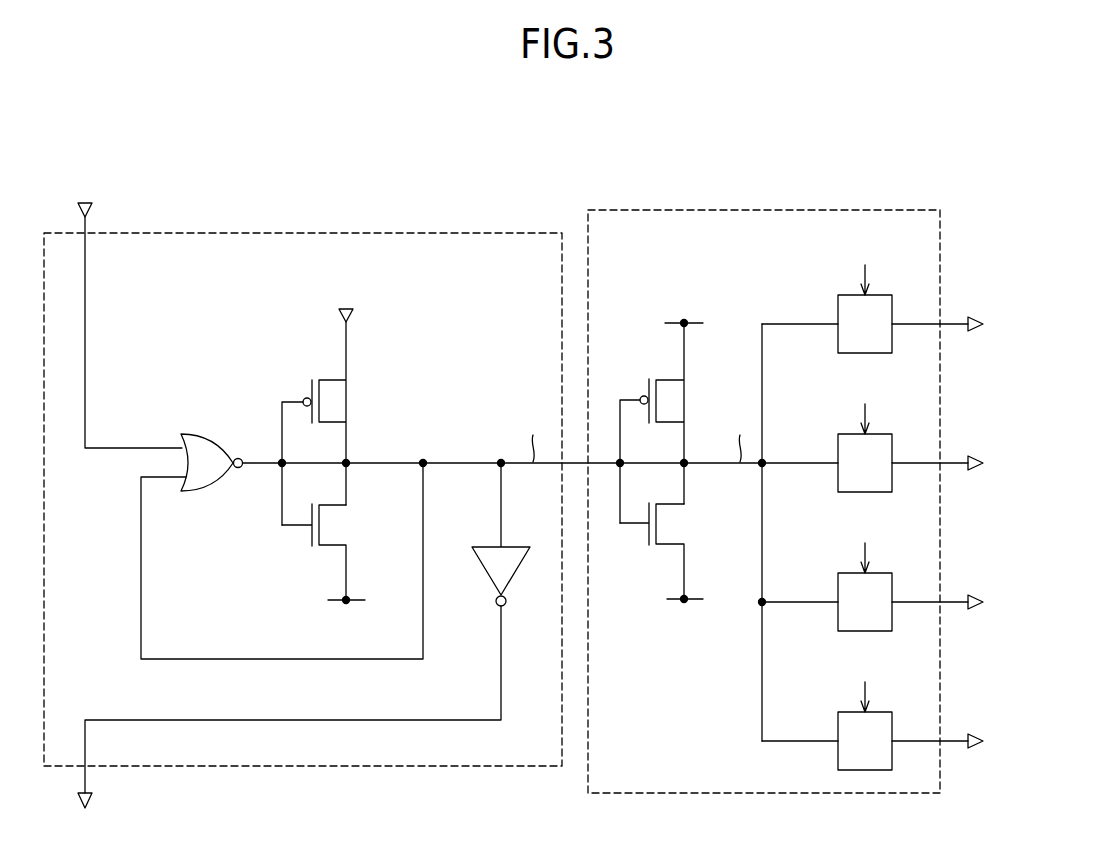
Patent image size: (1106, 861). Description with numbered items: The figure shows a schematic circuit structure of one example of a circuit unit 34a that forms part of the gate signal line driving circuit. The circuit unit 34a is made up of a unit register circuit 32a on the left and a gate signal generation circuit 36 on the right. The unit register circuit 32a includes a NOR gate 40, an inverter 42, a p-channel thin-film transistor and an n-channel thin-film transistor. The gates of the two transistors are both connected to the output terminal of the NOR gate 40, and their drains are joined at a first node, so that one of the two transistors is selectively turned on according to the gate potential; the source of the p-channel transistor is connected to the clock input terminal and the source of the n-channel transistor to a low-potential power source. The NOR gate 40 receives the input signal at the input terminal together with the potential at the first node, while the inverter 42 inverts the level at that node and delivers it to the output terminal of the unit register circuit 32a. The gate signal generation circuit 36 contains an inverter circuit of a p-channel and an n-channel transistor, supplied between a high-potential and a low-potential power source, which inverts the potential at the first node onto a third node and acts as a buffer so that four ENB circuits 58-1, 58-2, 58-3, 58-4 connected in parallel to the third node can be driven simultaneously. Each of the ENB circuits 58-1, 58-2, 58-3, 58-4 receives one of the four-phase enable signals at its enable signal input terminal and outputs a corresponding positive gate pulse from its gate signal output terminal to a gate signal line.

The circuit unit 34a is at (991, 195).
The unit register circuit 32a is at (523, 233).
The gate signal generation circuit 36 is at (900, 210).
The NOR gate 40 is at (213, 440).
The inverter 42 is at (498, 572).
The ENB circuit 58-1 is at (838, 310).
The ENB circuit 58-2 is at (838, 449).
The ENB circuit 58-3 is at (838, 588).
The ENB circuit 58-4 is at (838, 727).